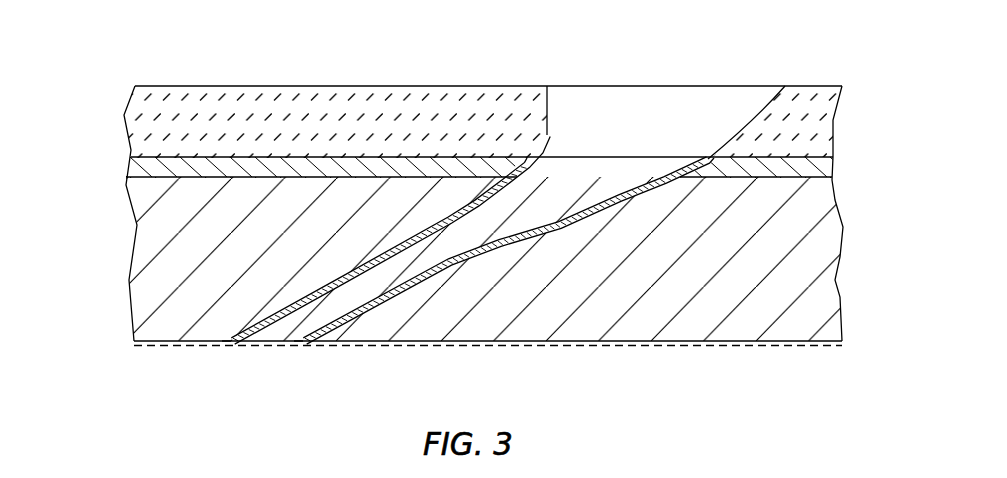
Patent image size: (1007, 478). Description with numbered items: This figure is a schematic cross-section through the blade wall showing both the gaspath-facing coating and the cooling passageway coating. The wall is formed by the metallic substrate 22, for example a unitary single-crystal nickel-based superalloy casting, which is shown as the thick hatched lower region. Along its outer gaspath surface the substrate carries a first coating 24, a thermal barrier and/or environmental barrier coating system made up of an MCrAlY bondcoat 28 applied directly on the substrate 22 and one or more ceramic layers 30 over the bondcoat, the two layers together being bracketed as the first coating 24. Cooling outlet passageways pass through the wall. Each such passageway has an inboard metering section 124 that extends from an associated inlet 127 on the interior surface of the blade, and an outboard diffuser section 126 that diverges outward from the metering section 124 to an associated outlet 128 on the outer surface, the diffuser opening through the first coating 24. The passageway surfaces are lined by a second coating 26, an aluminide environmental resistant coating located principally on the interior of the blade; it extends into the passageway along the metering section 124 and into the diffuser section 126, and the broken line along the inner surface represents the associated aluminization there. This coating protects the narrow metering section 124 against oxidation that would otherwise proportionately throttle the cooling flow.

The metallic substrate 22 is at (170, 262).
The first coating 24 is at (103, 87).
The second coating 26 is at (156, 346).
The MCrAlY bondcoat 28 is at (150, 171).
The ceramic layer 30 is at (175, 95).
The metering section 124 is at (326, 313).
The diffuser section 126 is at (637, 128).
The inlet 127 is at (263, 348).
The outlet 128 is at (750, 84).